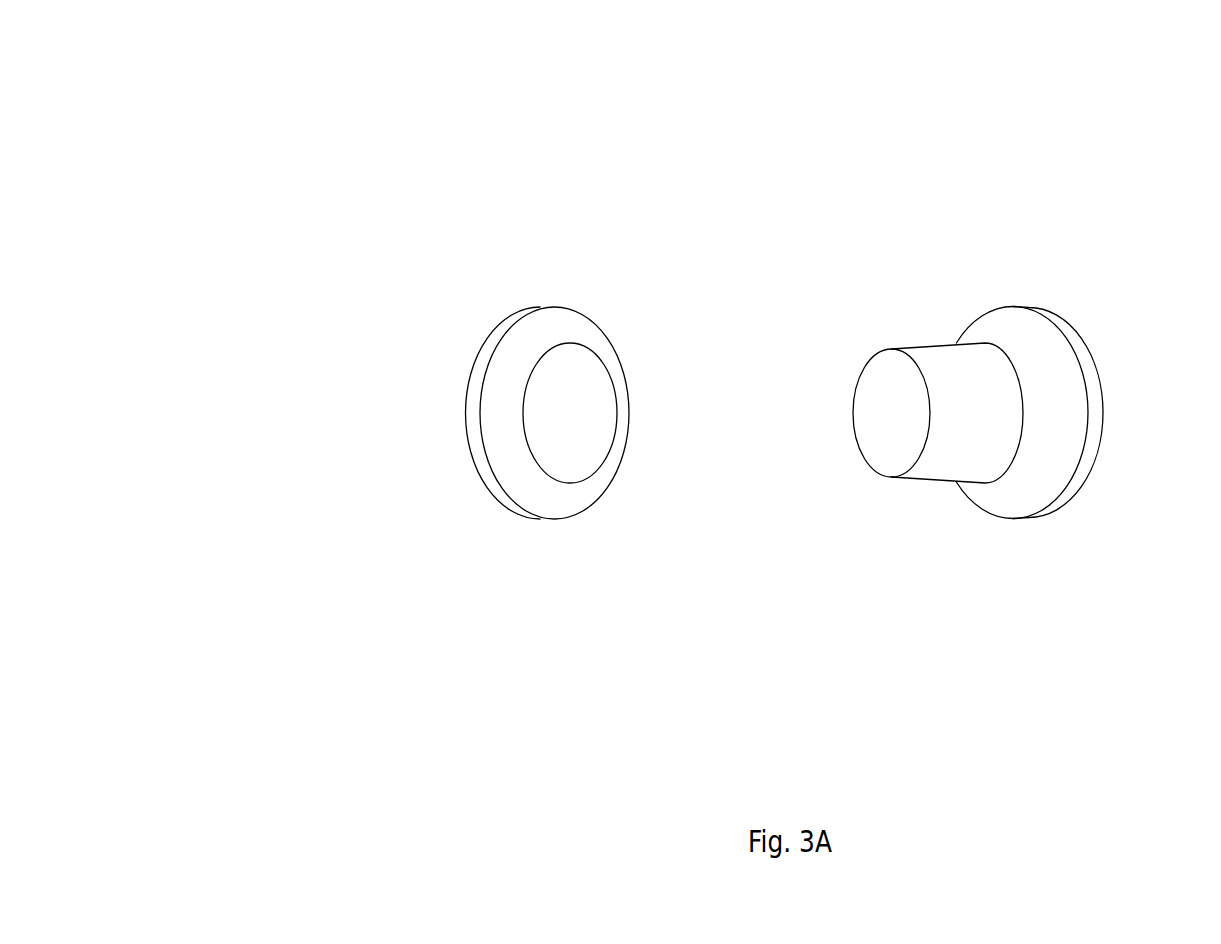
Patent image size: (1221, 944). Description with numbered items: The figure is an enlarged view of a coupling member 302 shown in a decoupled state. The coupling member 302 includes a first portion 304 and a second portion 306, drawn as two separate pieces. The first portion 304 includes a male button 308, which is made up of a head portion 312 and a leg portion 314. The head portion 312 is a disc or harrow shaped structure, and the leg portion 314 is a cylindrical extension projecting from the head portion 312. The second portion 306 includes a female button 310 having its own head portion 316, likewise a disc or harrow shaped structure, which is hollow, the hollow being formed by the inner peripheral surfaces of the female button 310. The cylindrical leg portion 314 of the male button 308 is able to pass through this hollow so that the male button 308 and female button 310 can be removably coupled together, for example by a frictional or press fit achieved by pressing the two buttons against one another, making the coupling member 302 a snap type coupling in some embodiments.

The coupling member 302 is at (282, 132).
The first portion 304 is at (1026, 566).
The second portion 306 is at (503, 545).
The male button 308 is at (965, 336).
The female button 310 is at (583, 383).
The head portion 312 is at (1063, 333).
The leg portion 314 is at (927, 482).
The head portion 316 is at (481, 384).